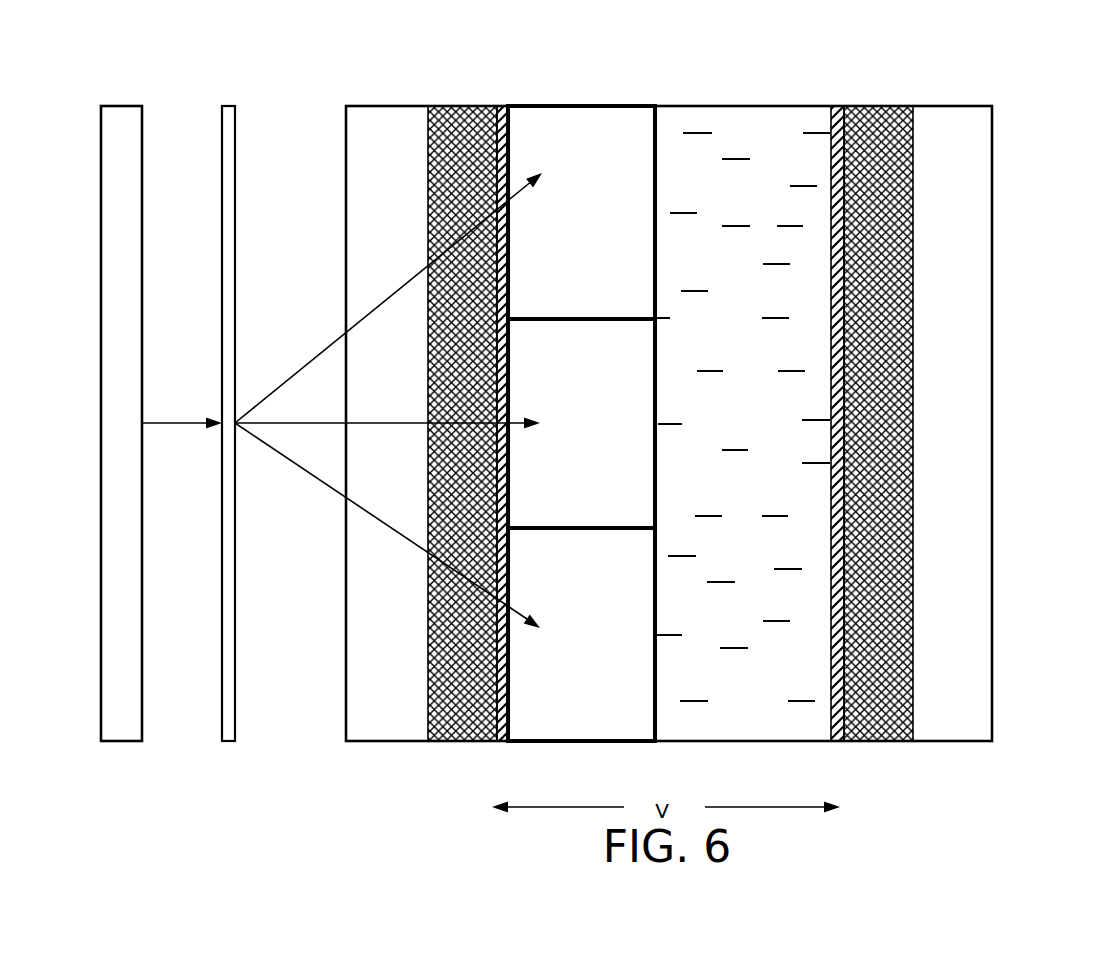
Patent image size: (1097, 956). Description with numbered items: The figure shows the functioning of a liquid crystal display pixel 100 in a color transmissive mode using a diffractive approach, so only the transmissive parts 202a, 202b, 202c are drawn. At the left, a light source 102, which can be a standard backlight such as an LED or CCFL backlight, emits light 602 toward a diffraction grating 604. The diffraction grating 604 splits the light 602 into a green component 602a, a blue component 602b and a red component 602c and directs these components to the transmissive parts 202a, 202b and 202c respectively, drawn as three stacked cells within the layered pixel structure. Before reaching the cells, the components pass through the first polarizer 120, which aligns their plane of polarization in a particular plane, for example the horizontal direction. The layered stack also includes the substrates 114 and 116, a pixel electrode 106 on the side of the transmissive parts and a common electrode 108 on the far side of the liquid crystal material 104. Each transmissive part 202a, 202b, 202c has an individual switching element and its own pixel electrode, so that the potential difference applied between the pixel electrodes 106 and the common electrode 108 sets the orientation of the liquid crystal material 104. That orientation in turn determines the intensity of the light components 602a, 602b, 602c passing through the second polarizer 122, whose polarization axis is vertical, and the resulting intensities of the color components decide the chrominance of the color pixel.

The pixel 100 is at (230, 876).
The light source 102 is at (120, 742).
The liquid crystal material 104 is at (765, 120).
The pixel electrode 106 is at (500, 741).
The common electrode 108 is at (838, 741).
The substrate 114 is at (455, 106).
The substrate 116 is at (872, 106).
The first polarizer 120 is at (387, 106).
The second polarizer 122 is at (953, 106).
The transmissive part 202a is at (581, 212).
The transmissive part 202b is at (581, 423).
The transmissive part 202c is at (581, 634).
The light 602 is at (183, 427).
The green component 602a is at (278, 385).
The blue component 602b is at (265, 425).
The red component 602c is at (278, 457).
The diffraction grating 604 is at (230, 742).